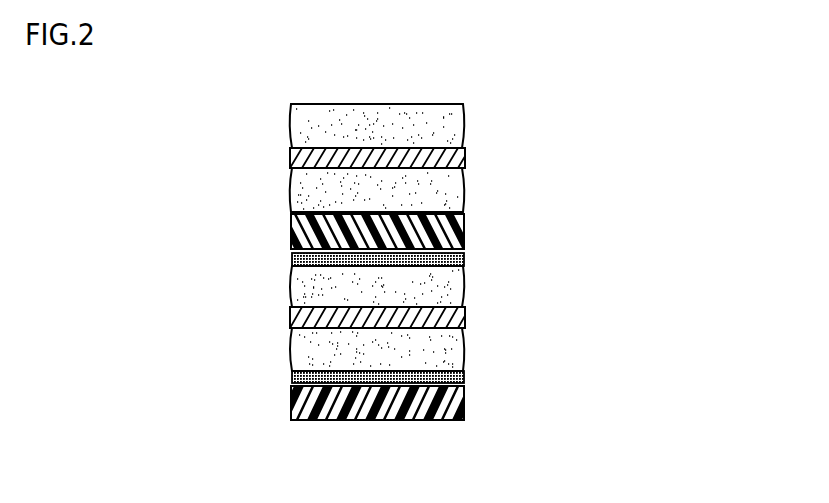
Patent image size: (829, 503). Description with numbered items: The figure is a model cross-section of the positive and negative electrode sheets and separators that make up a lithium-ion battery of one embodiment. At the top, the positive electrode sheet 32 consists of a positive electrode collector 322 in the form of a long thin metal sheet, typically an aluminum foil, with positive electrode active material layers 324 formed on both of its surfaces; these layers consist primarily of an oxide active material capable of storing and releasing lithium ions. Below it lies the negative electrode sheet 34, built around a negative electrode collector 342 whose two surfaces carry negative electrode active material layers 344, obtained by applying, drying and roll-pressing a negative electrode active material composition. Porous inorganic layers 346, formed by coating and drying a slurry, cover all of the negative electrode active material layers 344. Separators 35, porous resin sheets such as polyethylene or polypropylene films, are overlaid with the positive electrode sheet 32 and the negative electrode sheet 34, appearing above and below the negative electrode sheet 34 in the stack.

The positive electrode sheet 32 is at (380, 158).
The positive electrode collector 322 is at (463, 158).
The positive electrode active material layers 324 is at (463, 120).
The negative electrode sheet 34 is at (386, 317).
The negative electrode collector 342 is at (463, 318).
The negative electrode active material layers 344 is at (463, 280).
The porous inorganic layers 346 is at (463, 258).
The separators 35 is at (292, 231).